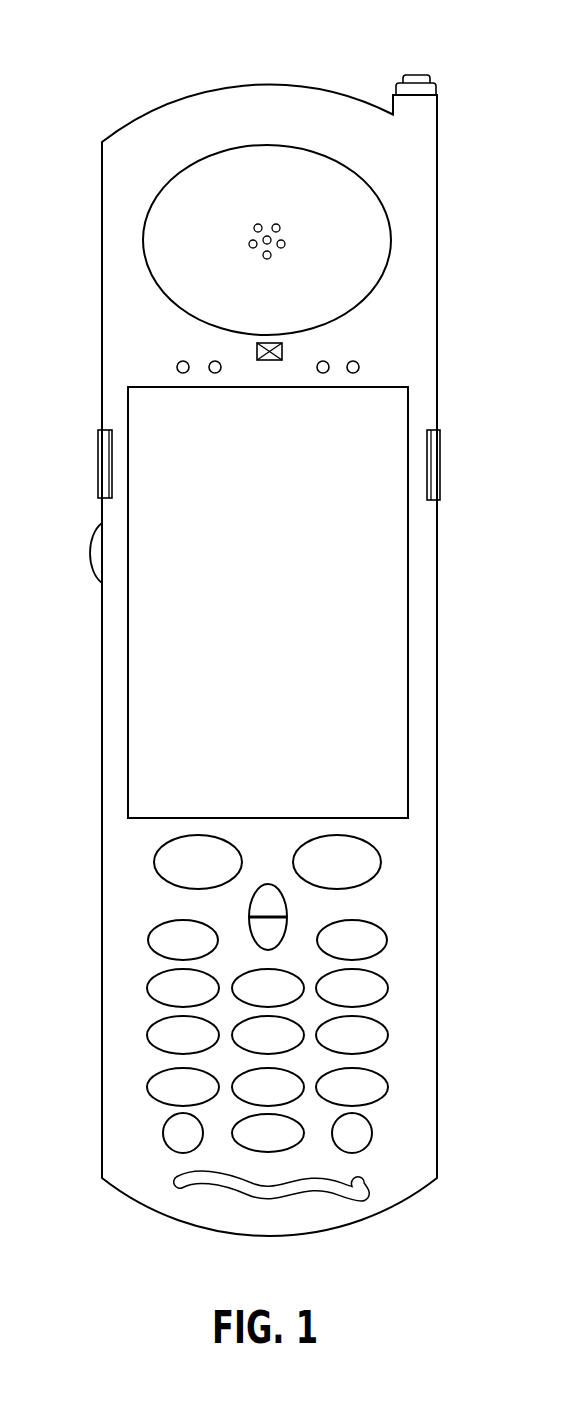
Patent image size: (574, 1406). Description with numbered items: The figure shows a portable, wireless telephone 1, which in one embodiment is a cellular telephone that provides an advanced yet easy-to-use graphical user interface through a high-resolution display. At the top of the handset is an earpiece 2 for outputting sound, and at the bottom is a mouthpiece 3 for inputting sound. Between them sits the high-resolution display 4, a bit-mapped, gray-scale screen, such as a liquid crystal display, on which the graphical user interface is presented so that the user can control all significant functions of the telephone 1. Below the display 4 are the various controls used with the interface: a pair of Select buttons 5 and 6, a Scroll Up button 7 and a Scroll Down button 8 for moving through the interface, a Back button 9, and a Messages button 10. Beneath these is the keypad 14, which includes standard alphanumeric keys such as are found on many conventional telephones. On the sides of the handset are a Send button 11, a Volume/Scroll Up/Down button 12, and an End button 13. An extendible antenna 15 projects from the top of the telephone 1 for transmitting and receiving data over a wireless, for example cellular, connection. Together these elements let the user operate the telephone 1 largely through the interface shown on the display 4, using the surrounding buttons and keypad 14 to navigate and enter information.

The telephone 1 is at (458, 35).
The earpiece 2 is at (352, 171).
The mouthpiece 3 is at (263, 1208).
The high-resolution display 4 is at (248, 818).
The Select button 5 is at (154, 861).
The Select button 6 is at (357, 886).
The Scroll Up button 7 is at (287, 891).
The Scroll Down button 8 is at (287, 928).
The Back button 9 is at (148, 940).
The Messages button 10 is at (388, 938).
The Send button 11 is at (98, 458).
The Volume/Scroll Up/Down button 12 is at (90, 553).
The End button 13 is at (440, 470).
The keypad 14 is at (380, 965).
The extendible antenna 15 is at (438, 89).